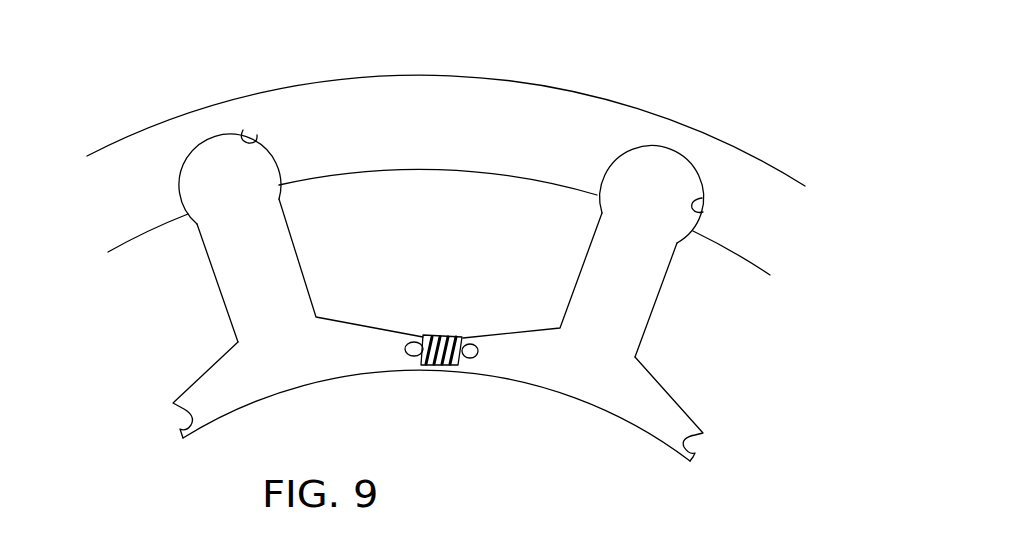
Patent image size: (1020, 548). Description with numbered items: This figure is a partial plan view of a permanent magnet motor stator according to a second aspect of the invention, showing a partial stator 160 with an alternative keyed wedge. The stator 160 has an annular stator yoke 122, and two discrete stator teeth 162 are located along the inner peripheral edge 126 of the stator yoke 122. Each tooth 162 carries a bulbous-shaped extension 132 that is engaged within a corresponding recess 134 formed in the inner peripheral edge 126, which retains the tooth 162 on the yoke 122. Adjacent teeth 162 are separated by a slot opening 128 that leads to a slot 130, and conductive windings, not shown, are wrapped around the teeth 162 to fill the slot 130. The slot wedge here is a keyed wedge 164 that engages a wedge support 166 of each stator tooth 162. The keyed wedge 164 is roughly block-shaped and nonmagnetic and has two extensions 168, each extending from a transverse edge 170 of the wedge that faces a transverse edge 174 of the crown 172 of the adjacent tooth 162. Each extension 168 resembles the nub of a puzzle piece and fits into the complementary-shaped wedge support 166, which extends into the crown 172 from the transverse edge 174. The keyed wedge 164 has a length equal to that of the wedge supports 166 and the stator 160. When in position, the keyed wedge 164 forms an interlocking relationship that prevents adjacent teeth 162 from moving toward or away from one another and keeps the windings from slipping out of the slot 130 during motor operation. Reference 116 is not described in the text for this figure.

The slot wedge end 116 is at (499, 350).
The stator yoke 122 is at (457, 95).
The inner peripheral edge 126 is at (380, 170).
The slot opening 128 is at (445, 382).
The slot 130 is at (495, 197).
The extension 132 is at (215, 143).
The recess 134 is at (243, 130).
The partial stator 160 is at (416, 58).
The stator tooth 162 is at (267, 248).
The keyed wedge 164 is at (448, 337).
The wedge support 166 is at (722, 446).
The extension 168 is at (433, 334).
The transverse edge 170 is at (458, 369).
The crown 172 is at (273, 382).
The transverse edge 174 is at (182, 400).